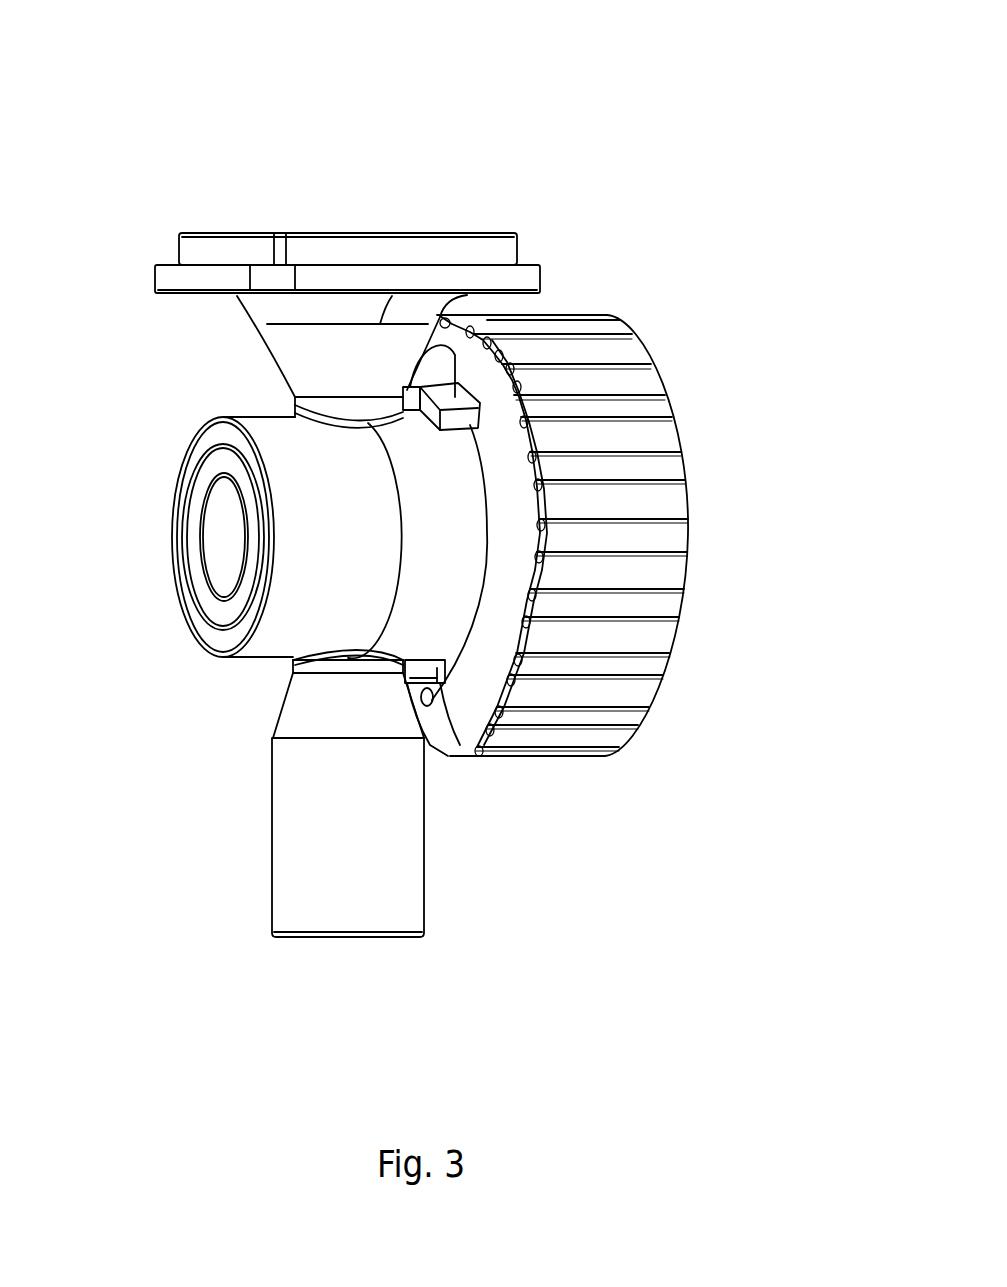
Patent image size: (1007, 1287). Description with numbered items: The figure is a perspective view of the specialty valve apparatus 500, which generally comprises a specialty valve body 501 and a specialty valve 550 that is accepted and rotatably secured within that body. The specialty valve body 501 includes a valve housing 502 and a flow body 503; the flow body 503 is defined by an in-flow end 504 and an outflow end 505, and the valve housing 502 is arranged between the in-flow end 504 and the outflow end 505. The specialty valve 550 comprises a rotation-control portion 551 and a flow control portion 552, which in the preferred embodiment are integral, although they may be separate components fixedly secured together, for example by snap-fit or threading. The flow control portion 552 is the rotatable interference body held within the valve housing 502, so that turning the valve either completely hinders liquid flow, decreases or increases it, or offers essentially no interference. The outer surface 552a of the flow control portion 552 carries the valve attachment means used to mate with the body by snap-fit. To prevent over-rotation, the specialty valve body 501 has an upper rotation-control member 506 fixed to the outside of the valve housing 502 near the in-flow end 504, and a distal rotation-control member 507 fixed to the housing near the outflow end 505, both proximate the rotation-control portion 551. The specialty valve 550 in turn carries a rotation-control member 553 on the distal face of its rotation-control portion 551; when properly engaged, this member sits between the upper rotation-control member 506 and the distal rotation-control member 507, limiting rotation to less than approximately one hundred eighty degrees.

The specialty valve apparatus 500 is at (634, 105).
The specialty valve body 501 is at (169, 989).
The valve housing 502 is at (300, 607).
The flow body 503 is at (283, 792).
The in-flow end 504 is at (291, 214).
The outflow end 505 is at (353, 951).
The upper rotation-control member 506 is at (295, 398).
The distal rotation-control member 507 is at (460, 750).
The specialty valve 550 is at (636, 793).
The rotation-control portion 551 is at (693, 568).
The flow control portion 552 is at (197, 537).
The outer surface 552a is at (503, 482).
The rotation-control member 553 is at (453, 397).